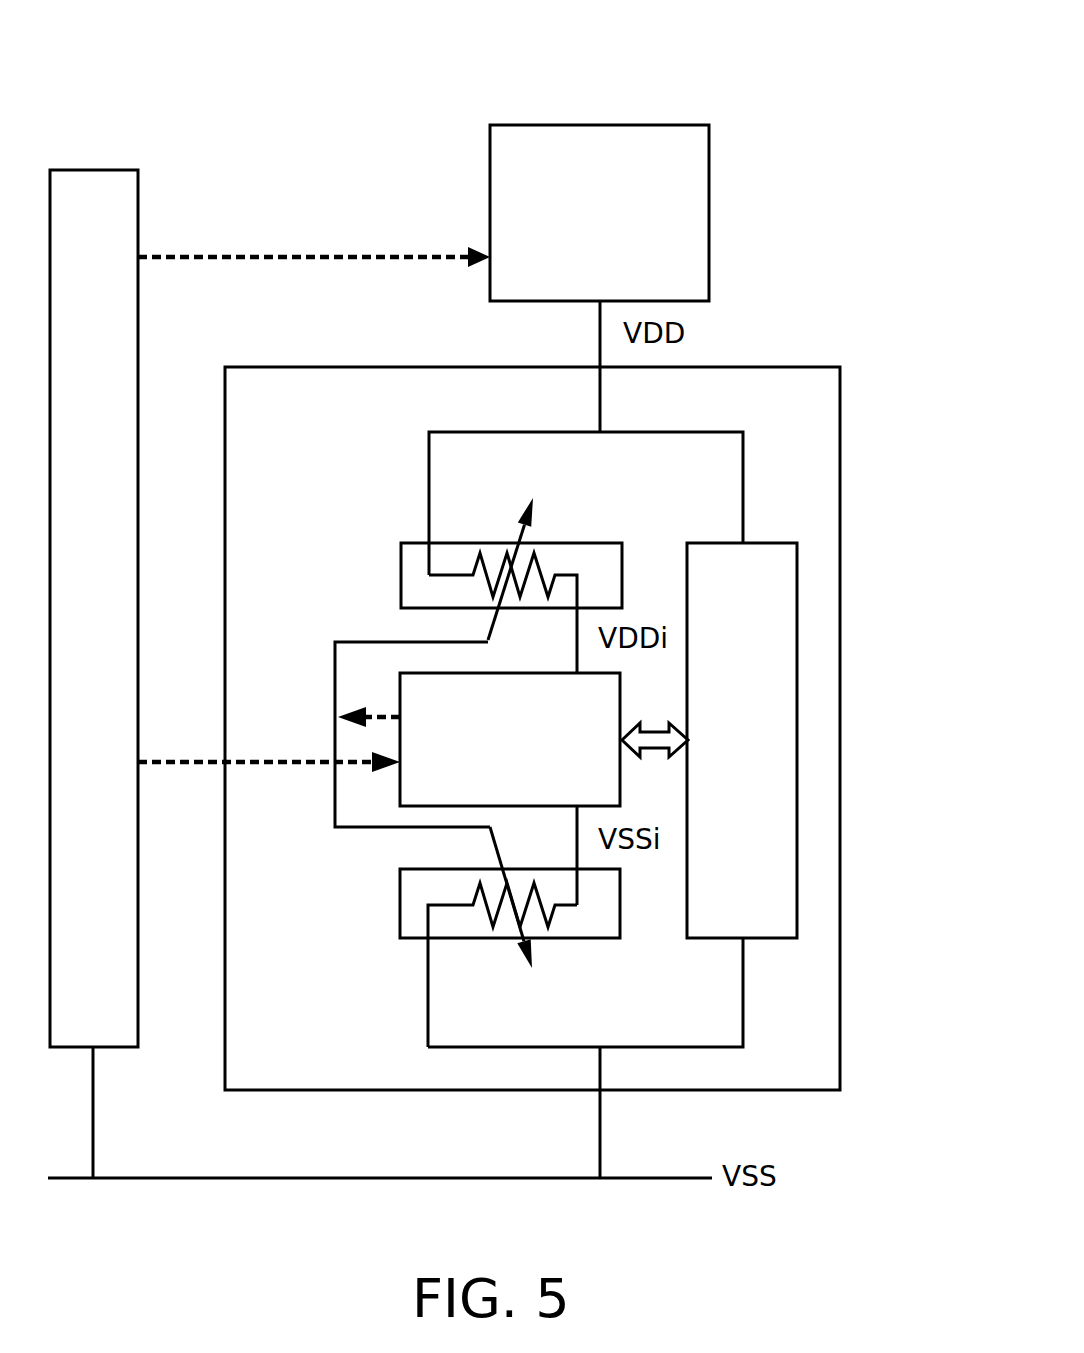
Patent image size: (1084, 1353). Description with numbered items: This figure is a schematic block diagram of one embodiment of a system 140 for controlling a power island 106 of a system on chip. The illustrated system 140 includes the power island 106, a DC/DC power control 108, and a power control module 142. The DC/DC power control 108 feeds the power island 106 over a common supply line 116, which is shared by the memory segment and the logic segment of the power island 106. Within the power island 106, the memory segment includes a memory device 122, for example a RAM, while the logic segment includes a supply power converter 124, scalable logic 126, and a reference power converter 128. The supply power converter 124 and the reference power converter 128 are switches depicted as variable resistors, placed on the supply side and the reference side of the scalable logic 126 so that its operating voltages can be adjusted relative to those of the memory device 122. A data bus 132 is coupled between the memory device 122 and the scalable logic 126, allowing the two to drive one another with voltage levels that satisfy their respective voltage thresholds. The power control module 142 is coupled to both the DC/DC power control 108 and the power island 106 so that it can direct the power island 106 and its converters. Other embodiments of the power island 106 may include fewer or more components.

The system 140 is at (243, 46).
The power control module 142 is at (138, 200).
The DC/DC power control 108 is at (709, 195).
The common supply line 116 is at (600, 403).
The power island 106 is at (840, 480).
The supply power converter 124 is at (597, 543).
The memory device 122 is at (797, 613).
The scalable logic 126 is at (400, 695).
The reference power converter 128 is at (600, 938).
The data bus 132 is at (652, 731).